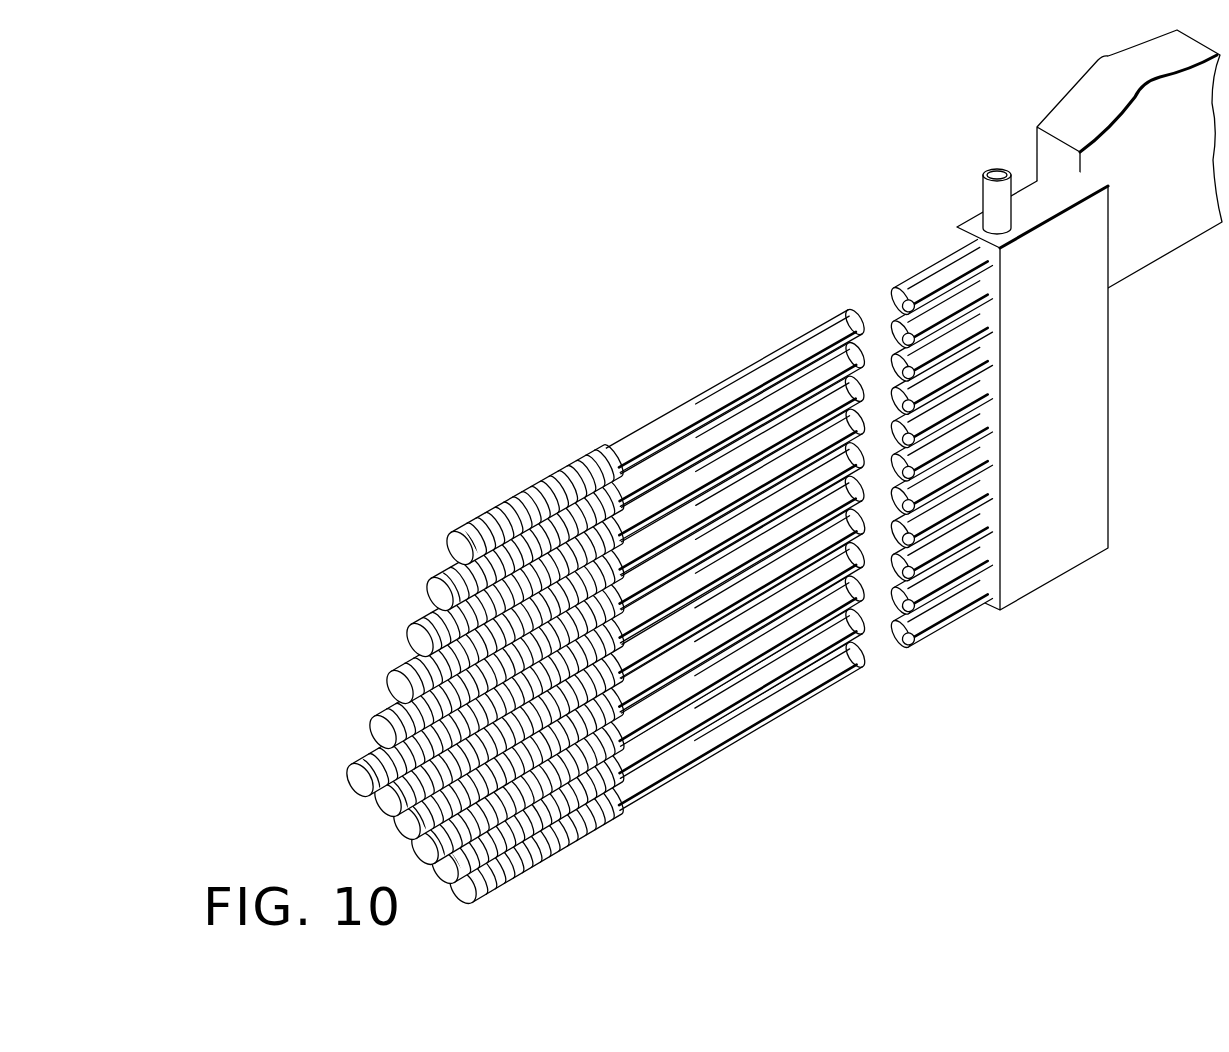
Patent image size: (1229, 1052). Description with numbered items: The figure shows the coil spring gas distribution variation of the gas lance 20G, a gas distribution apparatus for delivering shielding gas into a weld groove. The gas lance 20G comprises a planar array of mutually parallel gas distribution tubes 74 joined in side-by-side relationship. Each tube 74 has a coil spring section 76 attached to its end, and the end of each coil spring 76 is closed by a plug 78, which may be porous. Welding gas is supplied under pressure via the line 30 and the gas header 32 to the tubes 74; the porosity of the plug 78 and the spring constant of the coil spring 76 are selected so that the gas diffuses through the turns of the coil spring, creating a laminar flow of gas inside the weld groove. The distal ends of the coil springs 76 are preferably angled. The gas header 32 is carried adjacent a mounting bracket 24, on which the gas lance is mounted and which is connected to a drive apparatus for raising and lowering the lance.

The gas lance 20G is at (641, 388).
The mounting bracket 24 is at (1180, 184).
The line 30 is at (988, 198).
The gas header 32 is at (1086, 432).
The gas distribution tubes 74 is at (595, 642).
The coil spring section 76 is at (515, 500).
The plug 78 is at (410, 643).